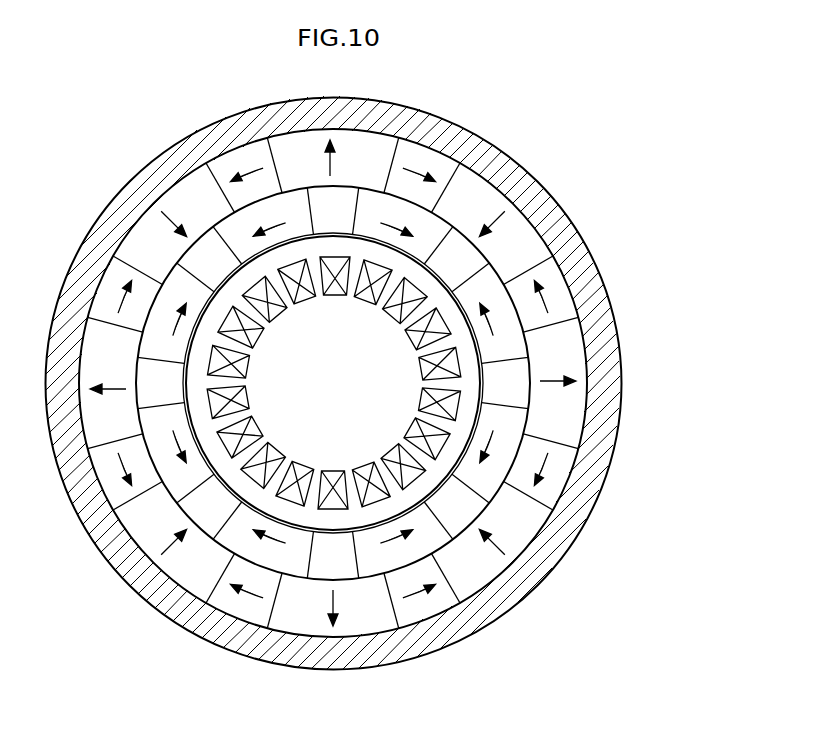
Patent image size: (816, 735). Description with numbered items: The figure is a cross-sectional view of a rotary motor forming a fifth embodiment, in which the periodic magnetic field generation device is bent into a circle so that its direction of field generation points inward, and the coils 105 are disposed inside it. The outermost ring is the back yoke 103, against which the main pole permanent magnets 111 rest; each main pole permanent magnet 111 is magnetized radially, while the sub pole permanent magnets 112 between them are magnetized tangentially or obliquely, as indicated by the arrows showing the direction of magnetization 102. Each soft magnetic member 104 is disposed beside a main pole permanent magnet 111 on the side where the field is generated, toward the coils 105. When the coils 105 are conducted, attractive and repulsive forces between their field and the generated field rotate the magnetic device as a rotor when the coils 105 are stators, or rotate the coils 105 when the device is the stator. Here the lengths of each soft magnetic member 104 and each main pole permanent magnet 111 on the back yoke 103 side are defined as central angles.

The direction of magnetization 102 is at (425, 600).
The back yoke 103 is at (533, 197).
The soft magnetic member 104 is at (508, 375).
The coil 105 is at (268, 318).
The main pole permanent magnet 111 is at (567, 408).
The sub pole permanent magnet 112 is at (552, 470).